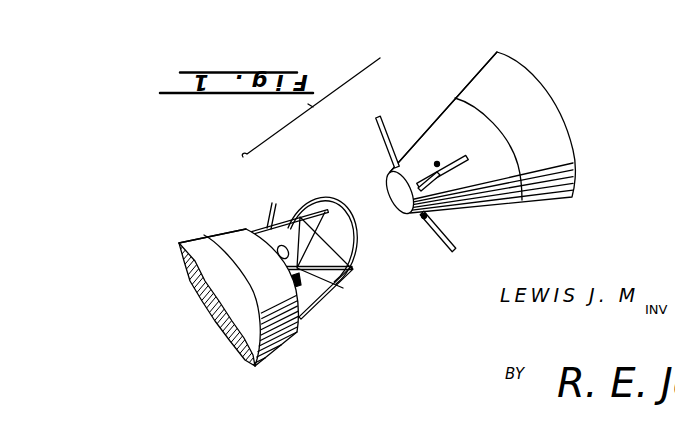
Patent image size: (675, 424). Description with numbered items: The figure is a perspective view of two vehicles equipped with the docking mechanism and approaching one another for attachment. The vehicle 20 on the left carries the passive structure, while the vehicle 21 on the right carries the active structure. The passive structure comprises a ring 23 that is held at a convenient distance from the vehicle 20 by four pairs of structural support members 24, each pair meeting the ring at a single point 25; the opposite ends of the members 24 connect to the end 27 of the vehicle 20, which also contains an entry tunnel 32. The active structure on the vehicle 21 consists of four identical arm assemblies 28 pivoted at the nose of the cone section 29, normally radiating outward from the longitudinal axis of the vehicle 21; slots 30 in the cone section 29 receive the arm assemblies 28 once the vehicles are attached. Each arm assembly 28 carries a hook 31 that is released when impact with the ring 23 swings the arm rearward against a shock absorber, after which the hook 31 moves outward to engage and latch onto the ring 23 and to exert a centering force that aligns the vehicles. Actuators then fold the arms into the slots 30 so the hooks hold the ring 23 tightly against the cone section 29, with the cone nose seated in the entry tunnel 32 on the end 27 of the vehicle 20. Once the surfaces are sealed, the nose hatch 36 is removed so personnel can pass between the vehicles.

The vehicle 20 is at (192, 287).
The vehicle 21 is at (521, 199).
The ring 23 is at (294, 198).
The structural support members 24 is at (269, 206).
The point 25 is at (327, 212).
The end 27 is at (253, 230).
The arm assemblies 28 is at (437, 162).
The cone section 29 is at (441, 116).
The slots 30 is at (457, 165).
The hook 31 is at (393, 165).
The entry tunnel 32 is at (314, 307).
The nose hatch 36 is at (402, 210).